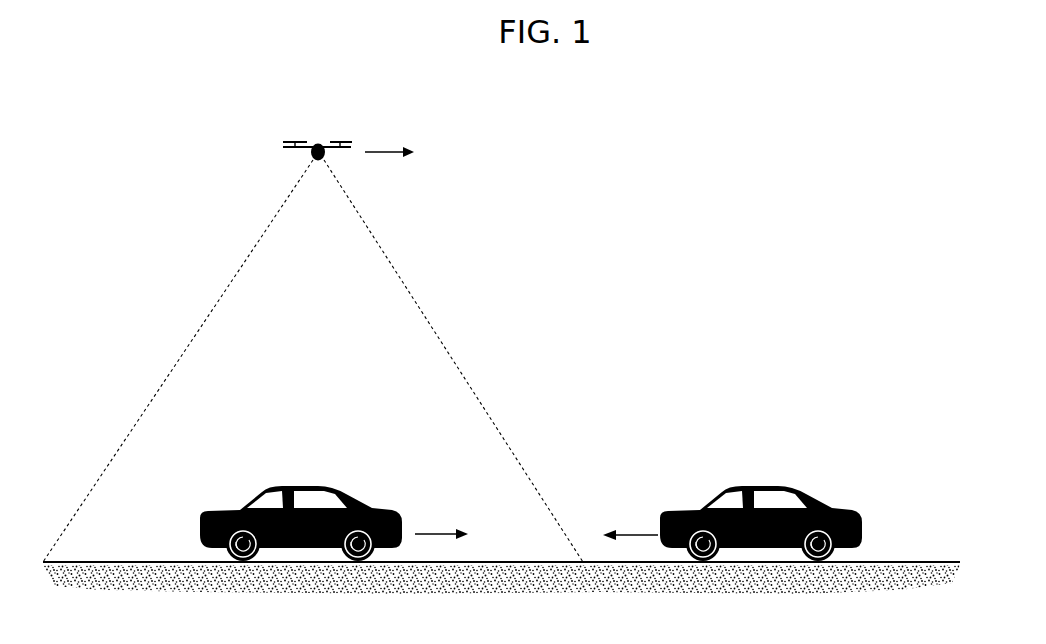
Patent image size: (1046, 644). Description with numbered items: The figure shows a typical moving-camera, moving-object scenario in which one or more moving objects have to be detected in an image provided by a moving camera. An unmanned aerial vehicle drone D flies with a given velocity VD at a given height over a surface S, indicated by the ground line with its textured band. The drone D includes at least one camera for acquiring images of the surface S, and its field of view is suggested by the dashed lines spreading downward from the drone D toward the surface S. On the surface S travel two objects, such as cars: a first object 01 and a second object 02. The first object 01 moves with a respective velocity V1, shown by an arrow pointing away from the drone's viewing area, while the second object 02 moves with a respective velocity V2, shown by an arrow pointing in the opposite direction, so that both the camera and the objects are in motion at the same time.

The unmanned aerial vehicle drone D is at (312, 130).
The first object 01 is at (296, 482).
The second object 02 is at (788, 480).
The surface S is at (907, 546).
The velocity of the drone VD is at (408, 167).
The velocity of the first object V1 is at (441, 515).
The velocity of the second object V2 is at (629, 516).